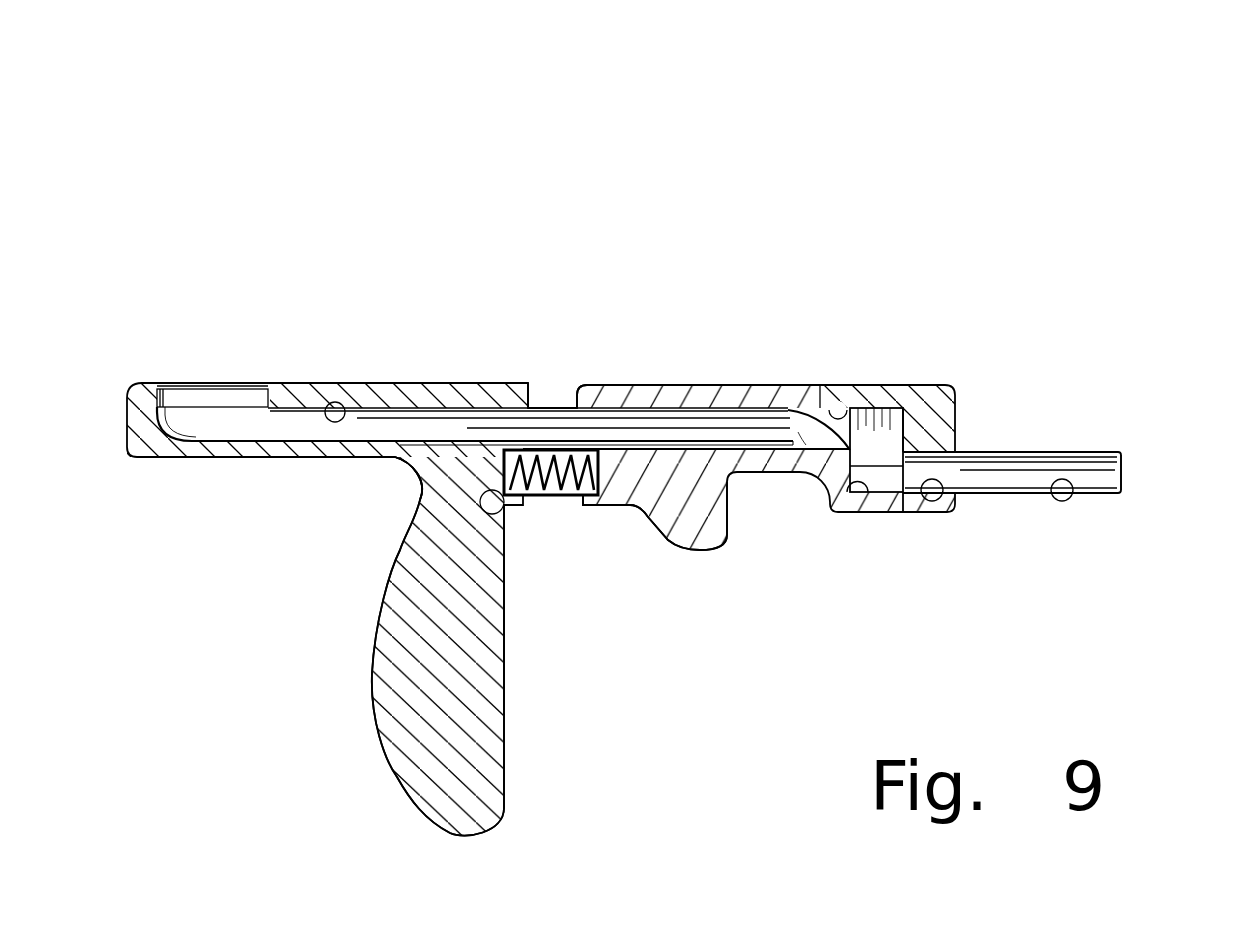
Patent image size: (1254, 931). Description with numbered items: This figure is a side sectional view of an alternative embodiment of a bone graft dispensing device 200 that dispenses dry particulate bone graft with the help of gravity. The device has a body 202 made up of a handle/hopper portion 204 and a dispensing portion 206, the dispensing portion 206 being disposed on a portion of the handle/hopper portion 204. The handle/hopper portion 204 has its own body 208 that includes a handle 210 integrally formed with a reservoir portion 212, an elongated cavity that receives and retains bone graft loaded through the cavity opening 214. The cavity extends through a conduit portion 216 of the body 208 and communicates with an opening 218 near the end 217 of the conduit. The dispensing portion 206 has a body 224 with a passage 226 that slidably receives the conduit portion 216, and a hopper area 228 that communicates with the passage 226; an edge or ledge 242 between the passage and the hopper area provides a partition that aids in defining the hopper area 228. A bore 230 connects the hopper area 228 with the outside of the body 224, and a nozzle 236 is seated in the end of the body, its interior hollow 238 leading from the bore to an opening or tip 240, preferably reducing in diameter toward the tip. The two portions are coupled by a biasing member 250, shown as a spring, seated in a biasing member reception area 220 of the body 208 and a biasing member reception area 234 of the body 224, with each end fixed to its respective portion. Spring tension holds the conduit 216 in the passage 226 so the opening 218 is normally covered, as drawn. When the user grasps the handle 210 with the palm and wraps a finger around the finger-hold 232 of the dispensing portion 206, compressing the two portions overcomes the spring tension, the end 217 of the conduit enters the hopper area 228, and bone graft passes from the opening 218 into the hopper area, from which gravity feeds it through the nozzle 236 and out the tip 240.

The bone graft dispensing device 200 is at (212, 132).
The body 202 is at (610, 660).
The handle/hopper portion 204 is at (380, 493).
The dispensing portion 206 is at (753, 310).
The body 208 is at (462, 383).
The handle 210 is at (386, 706).
The reservoir portion 212 is at (333, 402).
The cavity opening 214 is at (192, 383).
The conduit portion 216 is at (555, 406).
The end of the conduit 217 is at (820, 410).
The opening 218 is at (800, 432).
The biasing member reception area 220 is at (504, 525).
The body 224 is at (672, 385).
The passage 226 is at (840, 408).
The hopper area 228 is at (876, 450).
The bore 230 is at (934, 502).
The finger-hold 232 is at (685, 552).
The biasing member reception area 234 is at (592, 506).
The nozzle 236 is at (1035, 448).
The interior hollow 238 is at (1073, 501).
The opening or tip 240 is at (1122, 469).
The edge or ledge 242 is at (851, 504).
The biasing member 250 is at (562, 497).